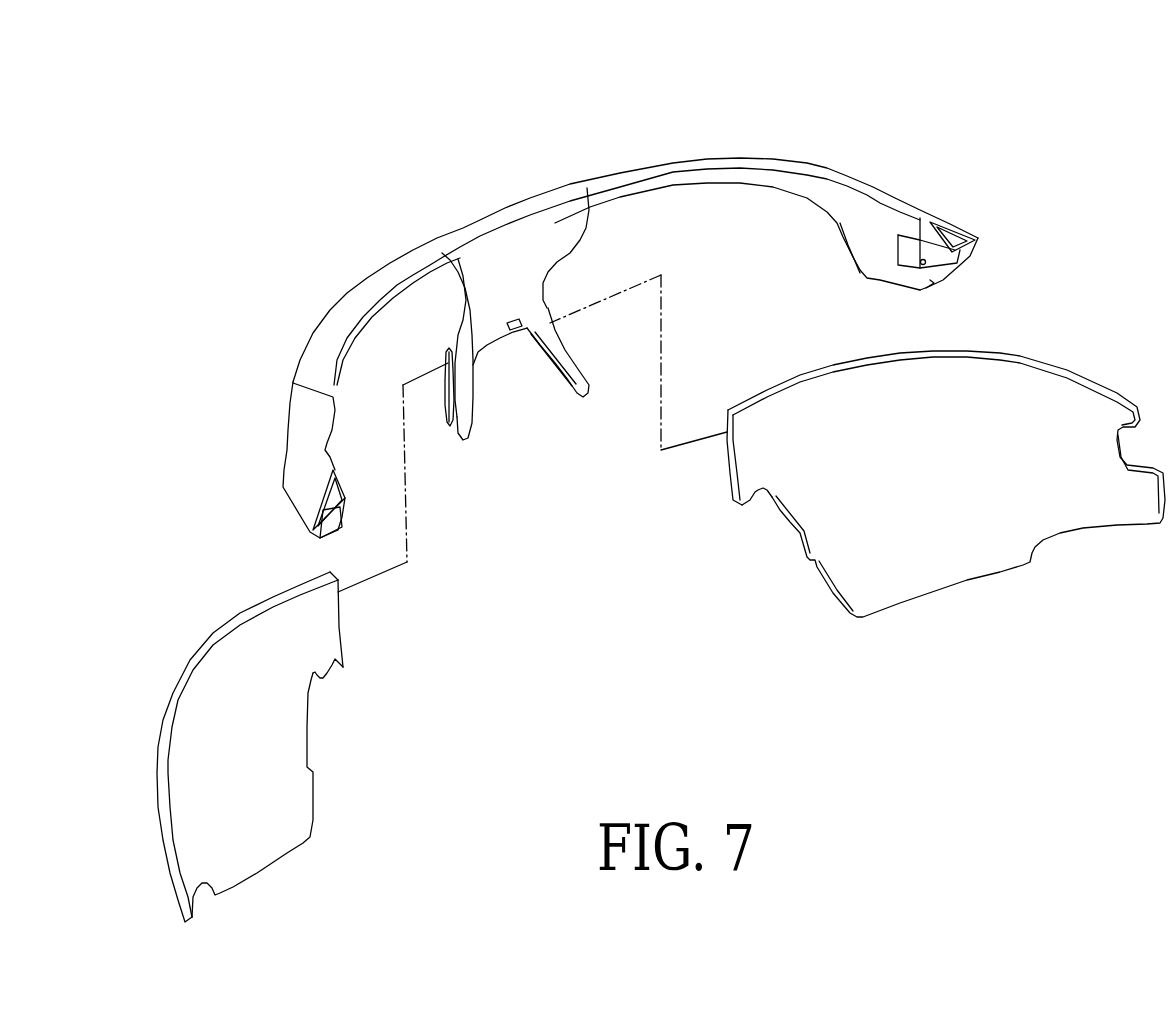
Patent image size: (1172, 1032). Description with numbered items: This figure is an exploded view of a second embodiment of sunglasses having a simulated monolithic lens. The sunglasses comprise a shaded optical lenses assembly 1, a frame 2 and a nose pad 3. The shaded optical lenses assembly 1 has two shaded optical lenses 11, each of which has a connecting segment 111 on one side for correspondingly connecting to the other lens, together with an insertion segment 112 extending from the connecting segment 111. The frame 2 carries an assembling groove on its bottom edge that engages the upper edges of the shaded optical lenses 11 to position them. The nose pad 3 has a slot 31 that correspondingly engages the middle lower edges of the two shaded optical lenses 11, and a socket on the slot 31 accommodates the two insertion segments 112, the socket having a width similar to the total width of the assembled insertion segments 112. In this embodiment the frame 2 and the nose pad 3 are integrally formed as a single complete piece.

The shaded optical lenses assembly 1 is at (661, 639).
The shaded optical lens 11 is at (661, 639).
The connecting segment 111 is at (537, 560).
The insertion segment 112 is at (543, 631).
The frame 2 is at (633, 126).
The nose pad 3 is at (506, 330).
The slot 31 is at (469, 465).